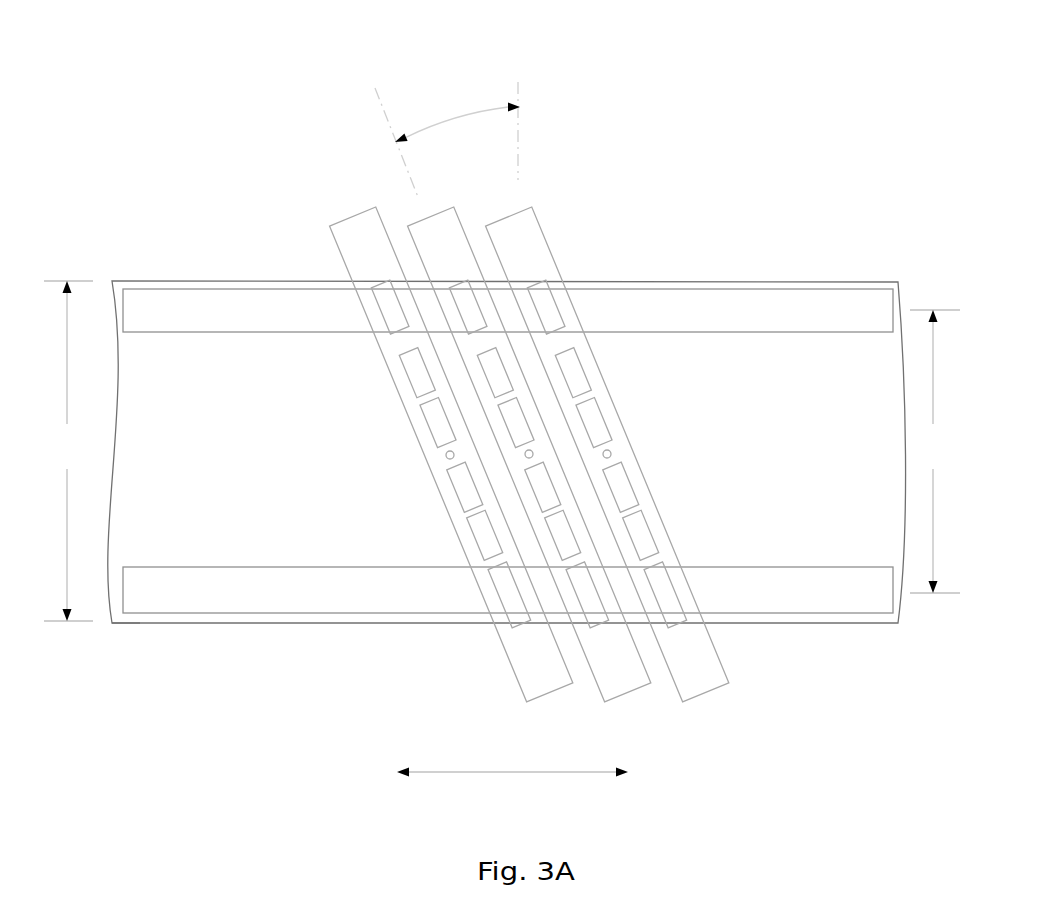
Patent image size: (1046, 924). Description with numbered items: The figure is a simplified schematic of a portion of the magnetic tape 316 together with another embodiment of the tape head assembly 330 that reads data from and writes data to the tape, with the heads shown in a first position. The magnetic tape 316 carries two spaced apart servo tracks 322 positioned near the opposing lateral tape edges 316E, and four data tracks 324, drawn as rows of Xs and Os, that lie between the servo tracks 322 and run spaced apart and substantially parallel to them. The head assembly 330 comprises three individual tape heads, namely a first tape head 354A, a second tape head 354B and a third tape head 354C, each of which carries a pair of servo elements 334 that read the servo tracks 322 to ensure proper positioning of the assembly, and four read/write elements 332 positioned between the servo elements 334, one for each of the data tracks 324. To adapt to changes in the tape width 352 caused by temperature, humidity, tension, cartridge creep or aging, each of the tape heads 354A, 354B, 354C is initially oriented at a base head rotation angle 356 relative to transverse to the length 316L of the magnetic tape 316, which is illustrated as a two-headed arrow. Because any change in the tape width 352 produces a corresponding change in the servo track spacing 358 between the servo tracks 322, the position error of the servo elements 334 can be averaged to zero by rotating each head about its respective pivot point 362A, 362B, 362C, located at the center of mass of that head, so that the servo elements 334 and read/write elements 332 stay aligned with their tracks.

The magnetic tape 316 is at (870, 282).
The lateral tape edges 316E is at (161, 623).
The length of the magnetic tape 316L is at (565, 773).
The servo tracks 322 is at (735, 302).
The data tracks 324 is at (800, 368).
The tape head assembly 330 is at (325, 250).
The read/write elements 332 is at (572, 365).
The servo elements 334 is at (543, 310).
The tape width 352 is at (68, 451).
The first tape head 354A is at (398, 438).
The second tape head 354B is at (464, 428).
The third tape head 354C is at (686, 425).
The base head rotation angle 356 is at (455, 110).
The servo track spacing 358 is at (935, 451).
The pivot point 362A is at (447, 459).
The pivot point 362B is at (527, 458).
The pivot point 362C is at (612, 452).